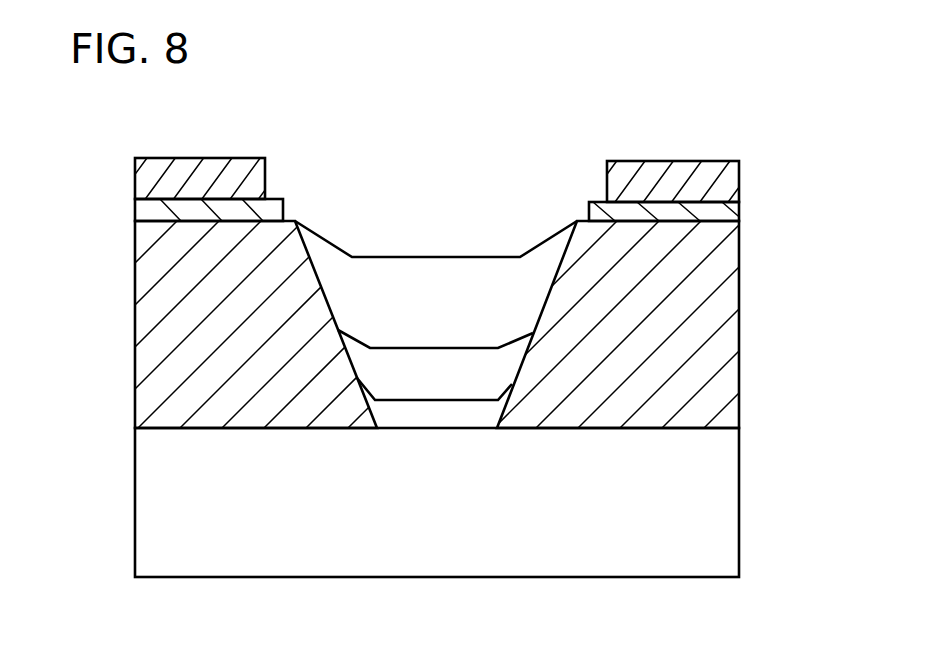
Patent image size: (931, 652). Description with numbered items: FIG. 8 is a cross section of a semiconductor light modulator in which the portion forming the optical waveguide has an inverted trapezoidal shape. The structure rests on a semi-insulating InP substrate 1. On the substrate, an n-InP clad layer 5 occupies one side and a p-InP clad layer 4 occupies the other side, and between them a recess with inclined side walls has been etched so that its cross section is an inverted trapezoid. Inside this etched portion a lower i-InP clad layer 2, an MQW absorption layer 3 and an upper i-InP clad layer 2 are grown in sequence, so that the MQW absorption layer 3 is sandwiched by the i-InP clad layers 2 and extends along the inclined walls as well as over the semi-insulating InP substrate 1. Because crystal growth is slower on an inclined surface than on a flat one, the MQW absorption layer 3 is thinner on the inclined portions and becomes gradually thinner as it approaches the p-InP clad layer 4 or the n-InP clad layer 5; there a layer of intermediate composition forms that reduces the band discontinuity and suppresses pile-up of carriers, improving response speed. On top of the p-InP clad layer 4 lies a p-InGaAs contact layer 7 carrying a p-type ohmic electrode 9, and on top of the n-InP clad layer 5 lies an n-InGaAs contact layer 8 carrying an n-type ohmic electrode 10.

The semi-insulating InP substrate 1 is at (672, 503).
The i-InP clad layer 2 is at (503, 295).
The MQW absorption layer 3 is at (488, 370).
The p-InP clad layer 4 is at (692, 300).
The n-InP clad layer 5 is at (180, 315).
The p-InGaAs contact layer 7 is at (718, 213).
The n-InGaAs contact layer 8 is at (160, 211).
The p-type ohmic electrode 9 is at (710, 182).
The n-type ohmic electrode 10 is at (165, 175).